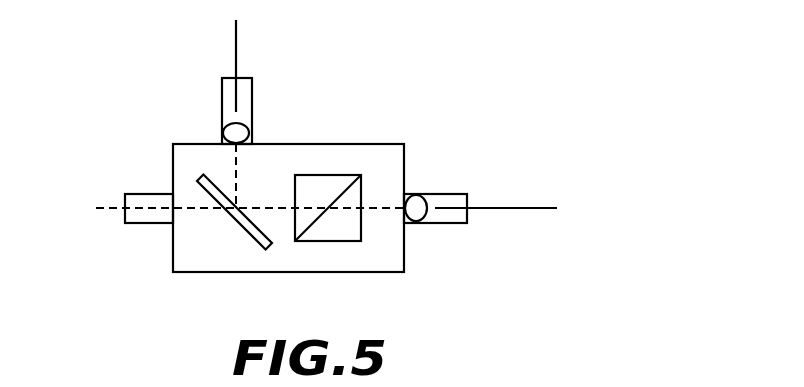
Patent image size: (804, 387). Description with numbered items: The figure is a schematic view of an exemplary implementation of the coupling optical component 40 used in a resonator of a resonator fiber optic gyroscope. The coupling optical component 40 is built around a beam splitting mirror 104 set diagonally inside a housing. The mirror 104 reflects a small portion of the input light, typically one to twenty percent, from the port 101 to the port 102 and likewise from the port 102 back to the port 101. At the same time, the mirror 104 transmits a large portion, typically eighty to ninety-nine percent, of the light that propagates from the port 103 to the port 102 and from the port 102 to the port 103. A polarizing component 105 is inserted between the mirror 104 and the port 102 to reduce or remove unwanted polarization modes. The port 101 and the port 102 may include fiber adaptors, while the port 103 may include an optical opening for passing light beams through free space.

The coupling optical component 40 is at (472, 77).
The port 101 is at (252, 115).
The port 102 is at (430, 193).
The port 103 is at (148, 193).
The beam splitting mirror 104 is at (240, 227).
The polarizing component 105 is at (331, 175).